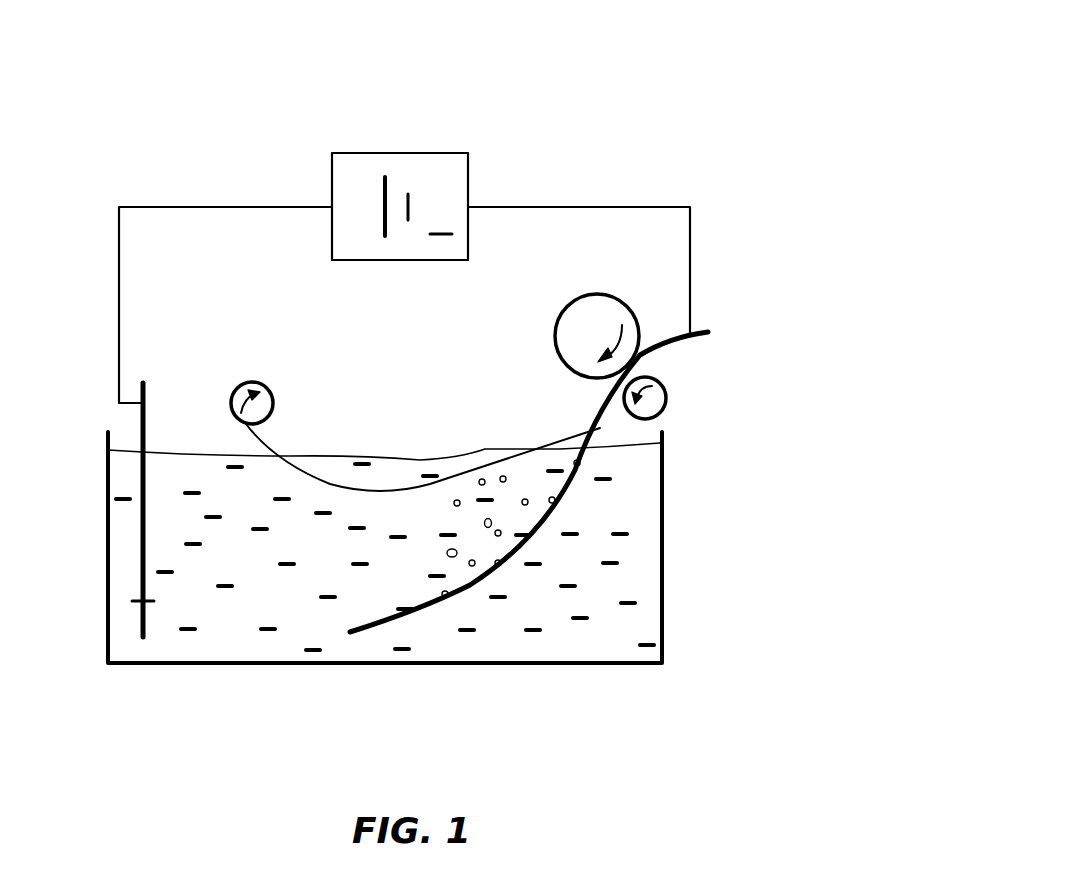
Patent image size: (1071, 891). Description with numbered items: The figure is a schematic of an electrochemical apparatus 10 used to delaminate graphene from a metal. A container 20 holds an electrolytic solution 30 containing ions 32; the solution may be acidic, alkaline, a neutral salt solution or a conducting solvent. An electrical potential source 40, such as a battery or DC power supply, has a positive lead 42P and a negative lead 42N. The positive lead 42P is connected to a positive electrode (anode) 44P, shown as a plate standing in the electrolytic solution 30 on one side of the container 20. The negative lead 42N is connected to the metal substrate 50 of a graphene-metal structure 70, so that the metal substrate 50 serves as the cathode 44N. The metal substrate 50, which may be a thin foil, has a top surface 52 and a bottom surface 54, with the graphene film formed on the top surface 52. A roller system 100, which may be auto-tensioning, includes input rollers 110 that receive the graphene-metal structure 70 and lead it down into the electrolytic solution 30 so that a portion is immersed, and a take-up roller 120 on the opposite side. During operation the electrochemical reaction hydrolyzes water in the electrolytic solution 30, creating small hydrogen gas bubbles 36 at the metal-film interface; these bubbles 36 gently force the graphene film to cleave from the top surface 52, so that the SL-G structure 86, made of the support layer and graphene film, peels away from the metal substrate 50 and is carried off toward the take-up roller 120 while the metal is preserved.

The electrochemical apparatus 10 is at (683, 92).
The container 20 is at (662, 468).
The electrolytic solution 30 is at (637, 566).
The ions 32 is at (648, 642).
The gas bubbles 36 is at (521, 498).
The electrical potential source 40 is at (397, 153).
The positive lead 42P is at (384, 178).
The negative lead 42N is at (410, 196).
The positive electrode (anode) 44P is at (141, 420).
The cathode 44N is at (676, 350).
The metal substrate 50 is at (458, 592).
The top surface 52 is at (381, 627).
The bottom surface 54 is at (410, 622).
The graphene-metal (G-M) structure 70 is at (595, 482).
The SL-G structure 86 is at (333, 484).
The roller system 100 is at (280, 325).
The input rollers 110 is at (610, 294).
The take-up roller 120 is at (236, 389).